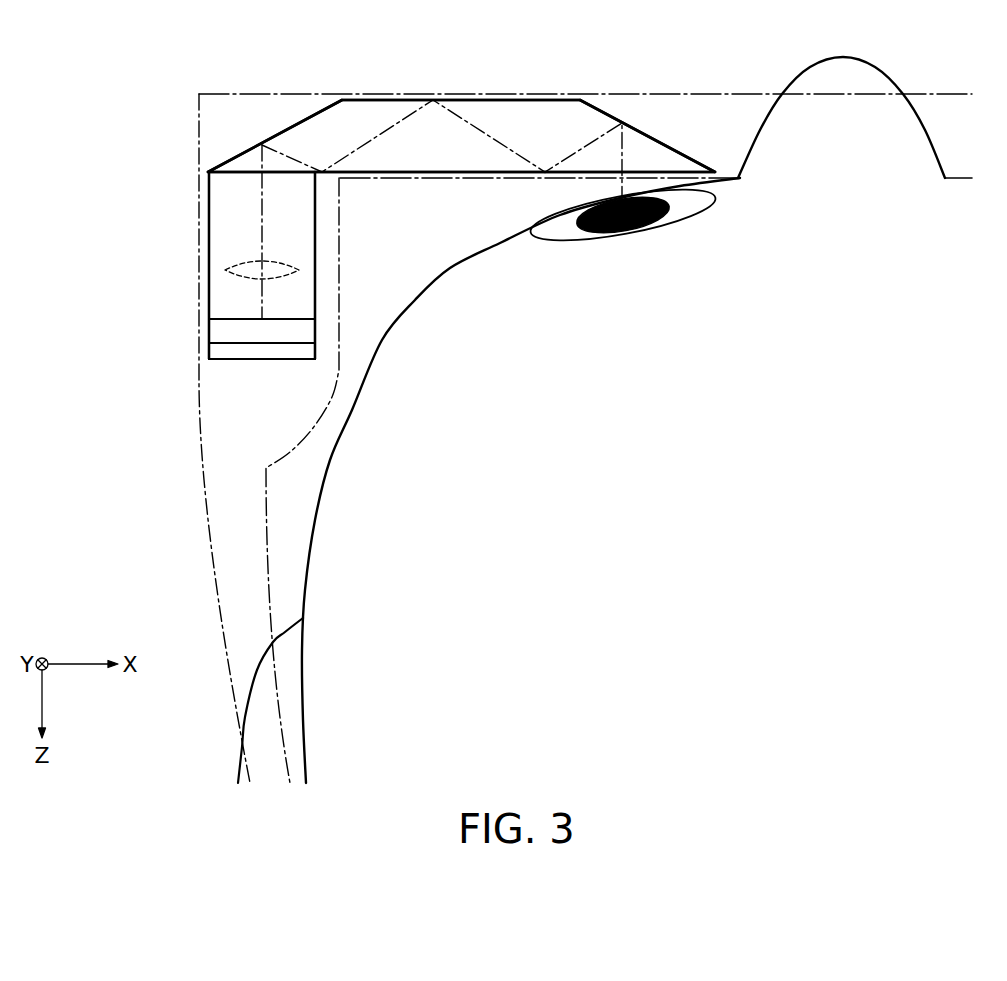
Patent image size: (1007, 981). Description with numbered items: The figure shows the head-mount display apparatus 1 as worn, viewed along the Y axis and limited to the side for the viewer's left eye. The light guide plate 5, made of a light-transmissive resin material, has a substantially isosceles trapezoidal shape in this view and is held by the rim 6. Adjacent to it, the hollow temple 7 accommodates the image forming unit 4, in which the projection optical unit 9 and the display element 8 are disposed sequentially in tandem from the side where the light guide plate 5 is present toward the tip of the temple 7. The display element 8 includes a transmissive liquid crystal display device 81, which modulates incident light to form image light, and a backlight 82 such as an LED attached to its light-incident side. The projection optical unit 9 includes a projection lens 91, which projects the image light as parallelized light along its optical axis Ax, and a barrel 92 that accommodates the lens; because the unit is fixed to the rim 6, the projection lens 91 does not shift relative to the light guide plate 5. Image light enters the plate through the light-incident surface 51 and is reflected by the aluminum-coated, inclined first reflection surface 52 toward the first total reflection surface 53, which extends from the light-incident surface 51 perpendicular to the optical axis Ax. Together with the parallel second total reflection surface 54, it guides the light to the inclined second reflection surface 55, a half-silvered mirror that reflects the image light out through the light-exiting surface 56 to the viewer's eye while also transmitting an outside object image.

The head-mount display apparatus 1 is at (575, 63).
The image forming unit 4 is at (85, 203).
The light guide plate 5 is at (480, 97).
The rim 6 is at (760, 93).
The temple 7 is at (200, 467).
The display element 8 is at (112, 320).
The projection optical unit 9 is at (112, 203).
The light-incident surface 51 is at (288, 173).
The first reflection surface 52 is at (298, 130).
The first total reflection surface 53 is at (367, 164).
The second total reflection surface 54 is at (365, 100).
The second reflection surface 55 is at (648, 140).
The light-exiting surface 56 is at (566, 175).
The transmissive liquid crystal display device 81 is at (209, 328).
The backlight 82 is at (209, 349).
The projection lens 91 is at (233, 262).
The barrel 92 is at (209, 232).
The optical axis Ax is at (260, 183).